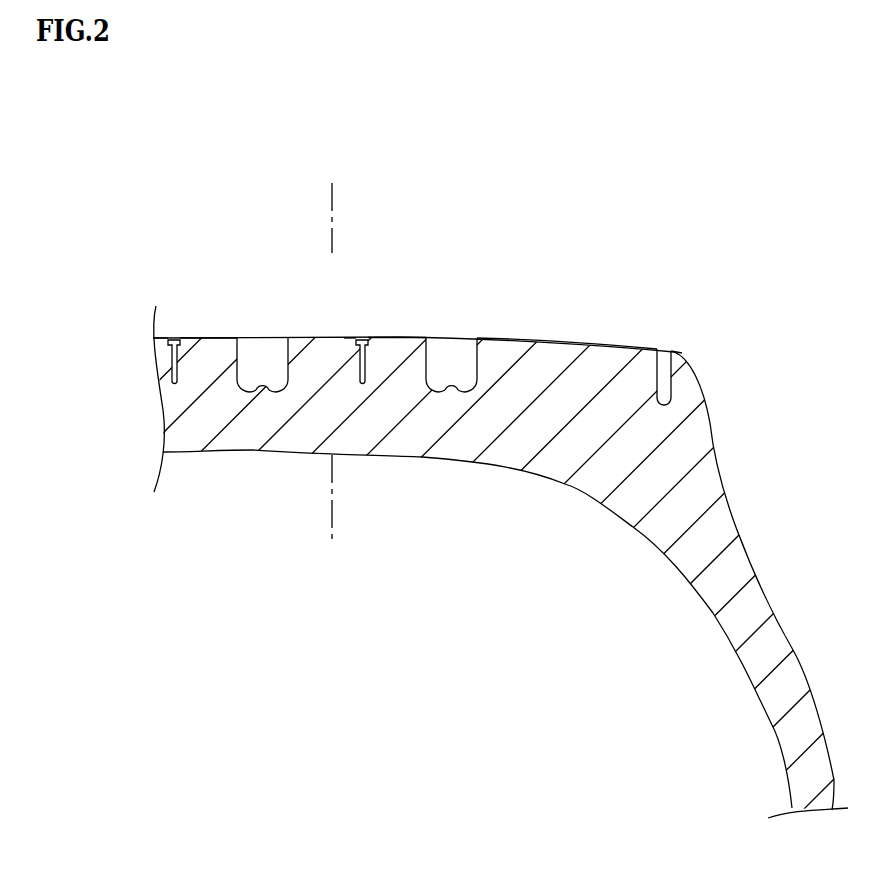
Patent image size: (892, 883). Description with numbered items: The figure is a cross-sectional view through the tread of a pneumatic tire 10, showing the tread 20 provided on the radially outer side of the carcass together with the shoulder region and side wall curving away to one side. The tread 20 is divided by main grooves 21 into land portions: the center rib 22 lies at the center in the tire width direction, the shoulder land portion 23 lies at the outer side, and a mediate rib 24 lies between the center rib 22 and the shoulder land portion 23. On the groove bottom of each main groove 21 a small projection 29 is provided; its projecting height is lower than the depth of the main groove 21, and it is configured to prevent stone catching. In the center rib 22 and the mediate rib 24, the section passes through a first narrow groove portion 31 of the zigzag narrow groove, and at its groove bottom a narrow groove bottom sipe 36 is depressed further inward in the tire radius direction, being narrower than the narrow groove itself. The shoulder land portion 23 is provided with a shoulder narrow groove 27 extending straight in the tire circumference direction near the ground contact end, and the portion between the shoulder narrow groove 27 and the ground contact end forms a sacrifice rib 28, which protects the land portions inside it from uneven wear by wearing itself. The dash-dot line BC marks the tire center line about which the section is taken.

The pneumatic tire 10 is at (427, 203).
The tread 20 is at (580, 395).
The main groove 21 is at (247, 357).
The center rib 22 is at (198, 343).
The shoulder land portion 23 is at (577, 348).
The mediate rib 24 is at (390, 343).
The shoulder narrow groove 27 is at (663, 360).
The sacrifice rib 28 is at (672, 352).
The small projection 29 is at (263, 375).
The first narrow groove portion 31 is at (176, 336).
The narrow groove bottom sipe 36 is at (153, 338).
The tire equatorial center line BC is at (333, 377).